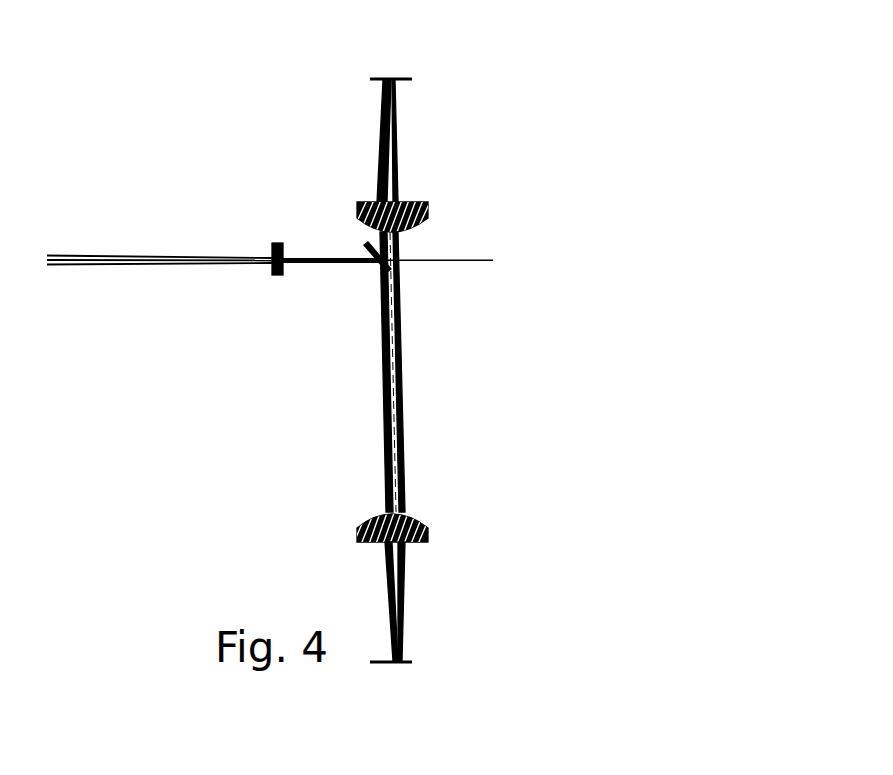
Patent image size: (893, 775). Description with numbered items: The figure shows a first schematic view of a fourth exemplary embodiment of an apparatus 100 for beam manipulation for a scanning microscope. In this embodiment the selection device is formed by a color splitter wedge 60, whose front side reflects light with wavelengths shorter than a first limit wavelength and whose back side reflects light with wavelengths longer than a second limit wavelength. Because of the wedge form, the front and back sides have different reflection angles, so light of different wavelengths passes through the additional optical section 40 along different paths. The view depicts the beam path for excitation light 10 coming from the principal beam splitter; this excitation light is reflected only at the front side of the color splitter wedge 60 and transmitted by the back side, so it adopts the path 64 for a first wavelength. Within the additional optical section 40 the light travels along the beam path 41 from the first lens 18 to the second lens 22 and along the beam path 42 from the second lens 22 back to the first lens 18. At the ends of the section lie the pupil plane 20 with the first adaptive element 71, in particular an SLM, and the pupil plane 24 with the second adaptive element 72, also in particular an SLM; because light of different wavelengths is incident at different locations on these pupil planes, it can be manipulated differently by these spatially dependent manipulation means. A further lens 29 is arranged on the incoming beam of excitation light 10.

The excitation light 10 is at (483, 260).
The lens 18 is at (421, 205).
The pupil plane 20 is at (432, 51).
The first adaptive element 71 is at (406, 79).
The lens 22 is at (428, 525).
The pupil plane 24 is at (433, 639).
The second adaptive element 72 is at (462, 642).
The lens 29 is at (277, 276).
The additional optical section 40 is at (346, 162).
The beam path from the first lens to the second lens 41 is at (404, 428).
The beam path from the second lens to the first lens 42 is at (384, 388).
The color splitter wedge 60 is at (370, 247).
The beam path for a first wavelength 64 is at (408, 342).
The apparatus 100 is at (240, 377).